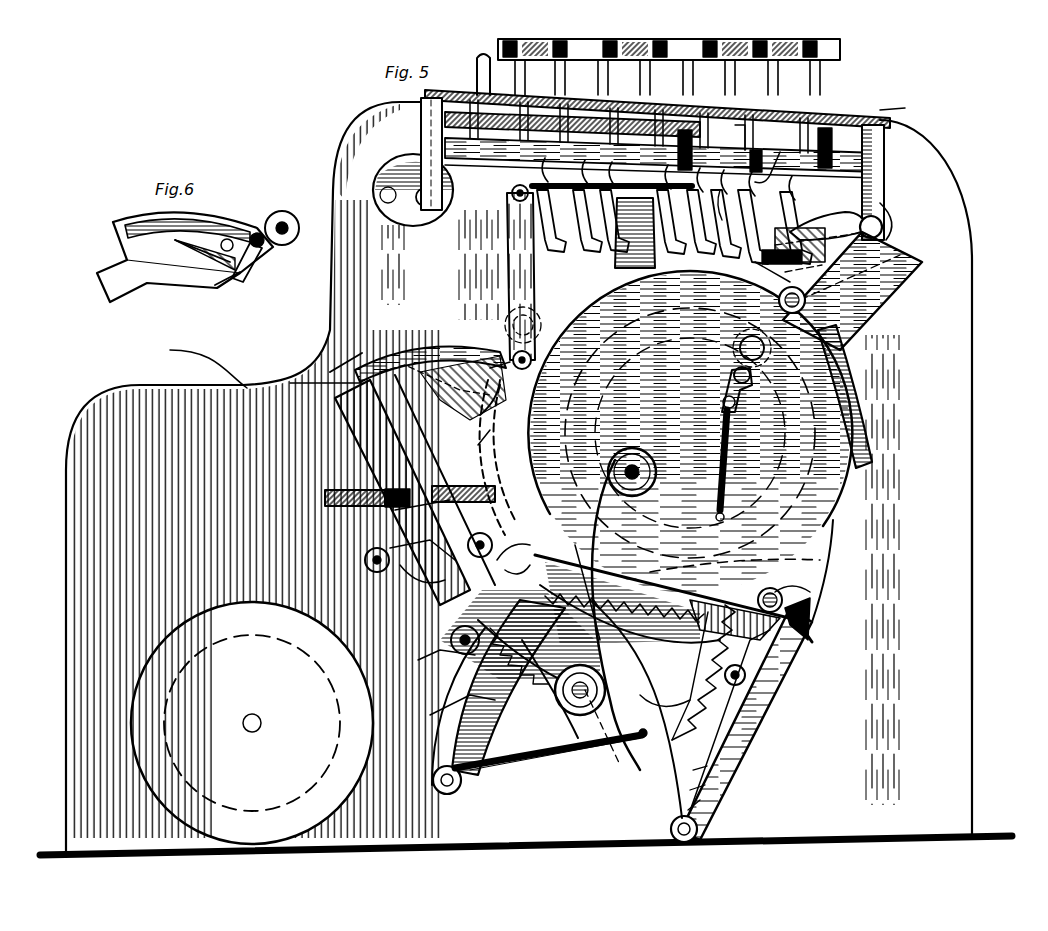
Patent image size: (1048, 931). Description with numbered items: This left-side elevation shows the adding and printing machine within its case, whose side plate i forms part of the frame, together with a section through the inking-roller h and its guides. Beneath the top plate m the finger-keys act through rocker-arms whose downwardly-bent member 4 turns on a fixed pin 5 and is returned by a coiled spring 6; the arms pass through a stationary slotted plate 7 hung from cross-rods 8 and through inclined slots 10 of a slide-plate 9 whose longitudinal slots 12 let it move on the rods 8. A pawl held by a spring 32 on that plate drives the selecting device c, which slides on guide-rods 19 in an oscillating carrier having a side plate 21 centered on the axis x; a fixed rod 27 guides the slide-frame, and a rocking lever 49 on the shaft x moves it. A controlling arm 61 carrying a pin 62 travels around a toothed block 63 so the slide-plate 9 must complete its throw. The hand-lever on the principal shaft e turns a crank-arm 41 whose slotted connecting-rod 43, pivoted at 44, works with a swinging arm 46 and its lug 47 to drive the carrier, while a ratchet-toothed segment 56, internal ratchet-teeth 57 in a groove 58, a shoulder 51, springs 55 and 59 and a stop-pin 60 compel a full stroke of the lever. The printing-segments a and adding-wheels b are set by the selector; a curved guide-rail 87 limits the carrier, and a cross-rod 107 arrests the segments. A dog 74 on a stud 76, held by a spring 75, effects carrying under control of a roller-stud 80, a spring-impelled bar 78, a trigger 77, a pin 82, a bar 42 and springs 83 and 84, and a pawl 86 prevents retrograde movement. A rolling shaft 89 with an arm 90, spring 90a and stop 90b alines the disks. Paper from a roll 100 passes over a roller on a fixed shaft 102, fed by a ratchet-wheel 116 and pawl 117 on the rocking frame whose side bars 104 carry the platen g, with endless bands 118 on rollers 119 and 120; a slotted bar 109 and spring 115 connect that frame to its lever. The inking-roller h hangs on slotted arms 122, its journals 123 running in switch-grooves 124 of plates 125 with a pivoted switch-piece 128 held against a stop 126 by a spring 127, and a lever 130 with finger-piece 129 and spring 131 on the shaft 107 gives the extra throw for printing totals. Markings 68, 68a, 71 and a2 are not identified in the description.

In FIG. 5, the printing-segments a is at (842, 53).
In FIG. 5, the stationary slotted plate 7 is at (810, 125).
In FIG. 5, the top plate m is at (887, 112).
In FIG. 5, the slide-plate 9 is at (920, 125).
In FIG. 5, the fixed pin 5 is at (884, 160).
In FIG. 5, the pin 62 is at (866, 200).
In FIG. 5, the longitudinal slots 12 is at (885, 220).
In FIG. 5, the stationary cross-rods 8 is at (425, 207).
In FIG. 5, the plate 68 is at (922, 262).
In FIG. 5, the plate edge 68a is at (850, 275).
In FIG. 5, the fixed rod 27 is at (805, 298).
In FIG. 5, the curved arm 71 is at (866, 462).
In FIG. 5, the arm 61 is at (800, 241).
In FIG. 5, the toothed block 63 is at (809, 252).
In FIG. 5, the spring 32 is at (772, 275).
In FIG. 5, the inclined slots 10 is at (761, 173).
In FIG. 5, the coiled spring 6 is at (791, 138).
In FIG. 5, the coiled spring 131 is at (611, 175).
In FIG. 5, the downwardly-bent member 4 is at (598, 238).
In FIG. 5, the rocking lever 49 is at (655, 250).
In FIG. 5, the hand-controlled lever 130 is at (508, 270).
In FIG. 5, the finger-piece 129 is at (512, 200).
In FIG. 5, the rock-shaft 107 is at (515, 352).
In FIG. 6, the rock-shaft 107 is at (285, 222).
In FIG. 5, the inking-roller h is at (505, 362).
In FIG. 5, the paper-platen g is at (430, 368).
In FIG. 5, the selecting device c is at (346, 353).
In FIG. 5, the side bars 104 is at (398, 480).
In FIG. 5, the fixed shaft 102 is at (445, 490).
In FIG. 5, the coiled spring 115 is at (477, 435).
In FIG. 5, the slotted arms 122 is at (481, 402).
In FIG. 6, the slotted arms 122 is at (255, 260).
In FIG. 5, the slotted bar 109 is at (320, 488).
In FIG. 5, the spring-held pawl 117 is at (395, 508).
In FIG. 5, the roller 119 is at (365, 570).
In FIG. 5, the ratchet-wheel 116 is at (395, 565).
In FIG. 5, the endless bands 118 is at (426, 588).
In FIG. 5, the slotted connecting-rod 43 is at (486, 543).
In FIG. 5, the lug 47 is at (523, 569).
In FIG. 5, the swinging arm 46 is at (455, 632).
In FIG. 5, the shoulder 51 is at (436, 657).
In FIG. 5, the pivot 44 is at (447, 708).
In FIG. 5, the side plate 21 is at (693, 456).
In FIG. 5, the arc segment a a2 is at (499, 457).
In FIG. 5, the axis x is at (645, 465).
In FIG. 5, the guide-rods 19 is at (742, 340).
In FIG. 5, the rolling shaft 89 is at (752, 375).
In FIG. 5, the short arm 90 is at (752, 392).
In FIG. 5, the stop 90b is at (740, 408).
In FIG. 5, the spring 90a is at (730, 465).
In FIG. 5, the spring 75 is at (600, 535).
In FIG. 5, the stud 76 is at (584, 583).
In FIG. 5, the adding-wheels b is at (624, 600).
In FIG. 5, the dog 74 is at (635, 605).
In FIG. 5, the internal ratchet-teeth 57 is at (670, 640).
In FIG. 5, the groove 58 is at (700, 600).
In FIG. 5, the ratchet-toothed segment 56 is at (760, 598).
In FIG. 5, the bar 42 is at (800, 592).
In FIG. 5, the curved guide-rail 87 is at (808, 612).
In FIG. 5, the roller-stud 80 is at (748, 675).
In FIG. 5, the stop-pin 60 is at (665, 708).
In FIG. 5, the spring-impelled bar 78 is at (756, 680).
In FIG. 5, the spring 55 is at (700, 815).
In FIG. 5, the second spring 59 is at (678, 775).
In FIG. 5, the spring-held pawl 86 is at (600, 676).
In FIG. 5, the fixed pin 82 is at (507, 687).
In FIG. 5, the trigger-bar 77 is at (458, 706).
In FIG. 5, the coiled spring 84 is at (500, 780).
In FIG. 5, the coiled spring 83 is at (585, 750).
In FIG. 5, the principal shaft e is at (555, 763).
In FIG. 5, the crank-arm 41 is at (540, 690).
In FIG. 5, the roller 120 is at (525, 530).
In FIG. 5, the paper roll 100 is at (252, 723).
In FIG. 5, the side plate i is at (974, 510).
In FIG. 6, the side plates 125 is at (165, 275).
In FIG. 6, the stop 126 is at (155, 222).
In FIG. 6, the spring 127 is at (198, 228).
In FIG. 6, the pivoted switch-piece 128 is at (226, 238).
In FIG. 6, the journals 123 is at (256, 232).
In FIG. 6, the switching-grooves 124 is at (218, 278).